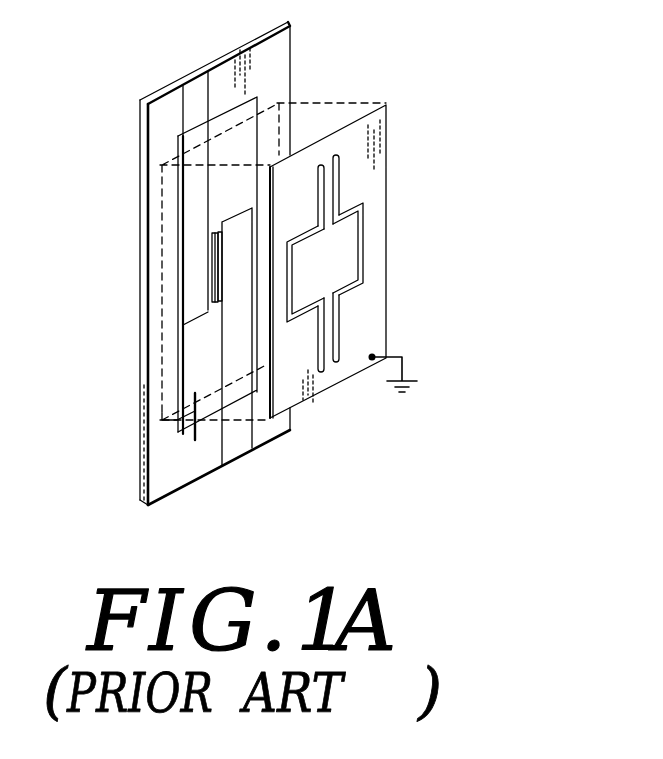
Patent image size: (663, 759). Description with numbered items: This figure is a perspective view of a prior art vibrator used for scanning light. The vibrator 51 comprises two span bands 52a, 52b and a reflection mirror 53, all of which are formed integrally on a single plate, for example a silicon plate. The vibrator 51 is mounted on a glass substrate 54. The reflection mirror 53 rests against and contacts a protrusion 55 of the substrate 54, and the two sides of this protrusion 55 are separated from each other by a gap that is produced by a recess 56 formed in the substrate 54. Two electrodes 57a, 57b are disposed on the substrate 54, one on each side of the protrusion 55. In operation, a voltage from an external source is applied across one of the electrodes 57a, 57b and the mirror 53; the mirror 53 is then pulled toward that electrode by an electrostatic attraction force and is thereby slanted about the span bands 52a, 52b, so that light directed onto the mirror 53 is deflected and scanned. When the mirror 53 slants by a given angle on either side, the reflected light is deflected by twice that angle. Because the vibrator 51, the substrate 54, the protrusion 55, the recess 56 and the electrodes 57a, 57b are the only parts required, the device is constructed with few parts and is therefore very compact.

The vibrator 51 is at (393, 139).
The span band 52a is at (340, 181).
The span band 52b is at (338, 328).
The reflection mirror 53 is at (340, 256).
The glass substrate 54 is at (148, 377).
The protrusion 55 is at (220, 272).
The recess 56 is at (196, 420).
The electrode 57a is at (246, 456).
The electrode 57b is at (189, 97).